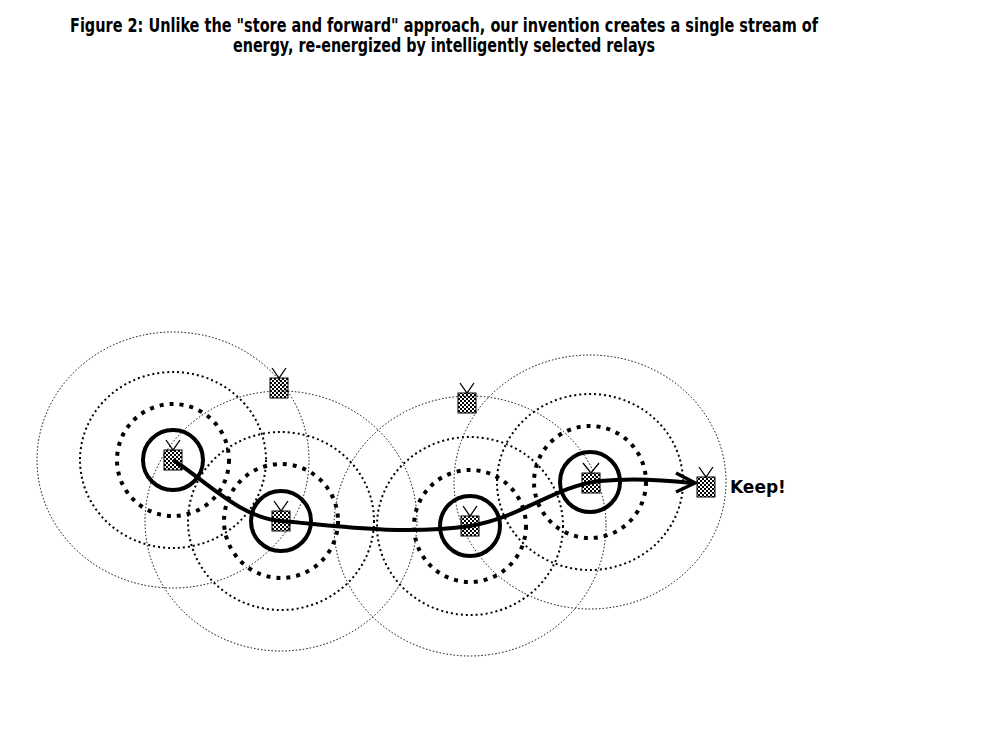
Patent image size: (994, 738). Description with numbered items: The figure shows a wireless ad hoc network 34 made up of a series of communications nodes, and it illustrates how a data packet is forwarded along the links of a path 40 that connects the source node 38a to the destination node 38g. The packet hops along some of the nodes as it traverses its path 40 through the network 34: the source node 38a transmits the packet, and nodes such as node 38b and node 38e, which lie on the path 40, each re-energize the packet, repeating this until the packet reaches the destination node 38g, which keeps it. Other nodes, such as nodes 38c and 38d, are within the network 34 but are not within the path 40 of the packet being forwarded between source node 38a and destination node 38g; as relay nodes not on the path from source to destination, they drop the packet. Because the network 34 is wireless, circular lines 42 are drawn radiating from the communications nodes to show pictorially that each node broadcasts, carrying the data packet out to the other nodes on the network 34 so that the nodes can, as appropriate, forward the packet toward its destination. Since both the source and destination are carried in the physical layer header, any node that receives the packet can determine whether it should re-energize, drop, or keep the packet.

The ad hoc network 34 is at (748, 240).
The circular lines 42 is at (98, 352).
The source node 38a is at (173, 437).
The node 38b is at (274, 527).
The node 38c is at (292, 383).
The node 38d is at (478, 393).
The node 38e is at (476, 532).
The destination node 38g is at (605, 467).
The path 40 is at (212, 495).